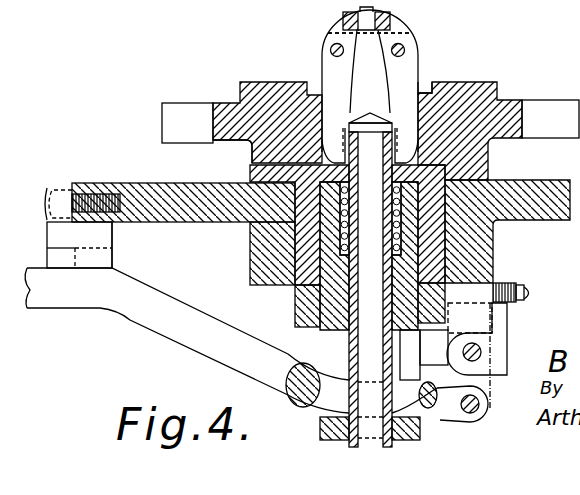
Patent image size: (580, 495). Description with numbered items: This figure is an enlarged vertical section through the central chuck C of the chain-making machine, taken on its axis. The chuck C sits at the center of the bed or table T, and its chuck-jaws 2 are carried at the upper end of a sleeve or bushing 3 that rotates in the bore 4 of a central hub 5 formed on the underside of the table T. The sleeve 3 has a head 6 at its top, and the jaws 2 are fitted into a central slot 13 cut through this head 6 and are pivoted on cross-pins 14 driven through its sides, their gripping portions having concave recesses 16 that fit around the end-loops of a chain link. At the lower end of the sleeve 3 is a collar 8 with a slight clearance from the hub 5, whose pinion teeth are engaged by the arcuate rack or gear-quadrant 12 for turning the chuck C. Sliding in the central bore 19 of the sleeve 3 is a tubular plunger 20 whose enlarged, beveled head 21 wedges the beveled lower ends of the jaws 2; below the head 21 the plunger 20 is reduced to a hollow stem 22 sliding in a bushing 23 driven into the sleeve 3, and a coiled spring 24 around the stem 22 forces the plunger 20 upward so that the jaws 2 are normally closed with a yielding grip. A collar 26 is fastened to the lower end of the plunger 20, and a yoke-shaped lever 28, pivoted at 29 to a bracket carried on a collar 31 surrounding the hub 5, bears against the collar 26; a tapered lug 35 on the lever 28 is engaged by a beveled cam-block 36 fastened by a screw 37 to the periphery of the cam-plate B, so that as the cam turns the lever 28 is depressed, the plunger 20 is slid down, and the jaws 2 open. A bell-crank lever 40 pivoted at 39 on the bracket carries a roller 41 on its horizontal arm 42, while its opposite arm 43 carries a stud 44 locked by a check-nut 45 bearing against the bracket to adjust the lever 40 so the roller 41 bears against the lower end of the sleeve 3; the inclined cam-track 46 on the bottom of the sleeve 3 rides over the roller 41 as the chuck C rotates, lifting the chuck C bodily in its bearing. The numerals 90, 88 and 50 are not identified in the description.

The cam-plate B is at (190, 194).
The screw 37 is at (48, 205).
The cam-block 36 is at (79, 245).
The tapered lug 35 is at (110, 250).
The yoke-shaped lever 28 is at (172, 337).
The tubular plunger 20 is at (349, 357).
The body block 90 is at (240, 83).
The bed or table T is at (517, 112).
The box 88 is at (213, 123).
The bore 4 is at (252, 160).
The central hub 5 is at (428, 92).
The sleeve or bushing 3 is at (292, 174).
The central bore 19 is at (435, 180).
The bushing 23 is at (365, 267).
The collar 8 is at (295, 307).
The collar 31 is at (493, 248).
The hollow stem 22 is at (370, 289).
The coiled spring 24 is at (388, 238).
The central slot 13 is at (390, 150).
The enlarged head 21 is at (346, 150).
The chuck C is at (426, 58).
The chuck-jaws 2 is at (370, 96).
The concave recesses 16 is at (366, 15).
The head 6 is at (342, 40).
The arcuate rack or gear-quadrant 12 is at (331, 52).
The cross-pins 14 is at (405, 48).
The arm 43 is at (505, 283).
The check-nut 45 is at (522, 291).
The stud 44 is at (531, 295).
The bell-crank lever 40 is at (502, 342).
The pivot 39 is at (482, 352).
The inclined cam-track 46 is at (412, 340).
The horizontal arm 42 is at (434, 347).
The roller 41 is at (400, 355).
The lever 50 is at (487, 387).
The pivot 29 is at (480, 405).
The collar 26 is at (420, 430).